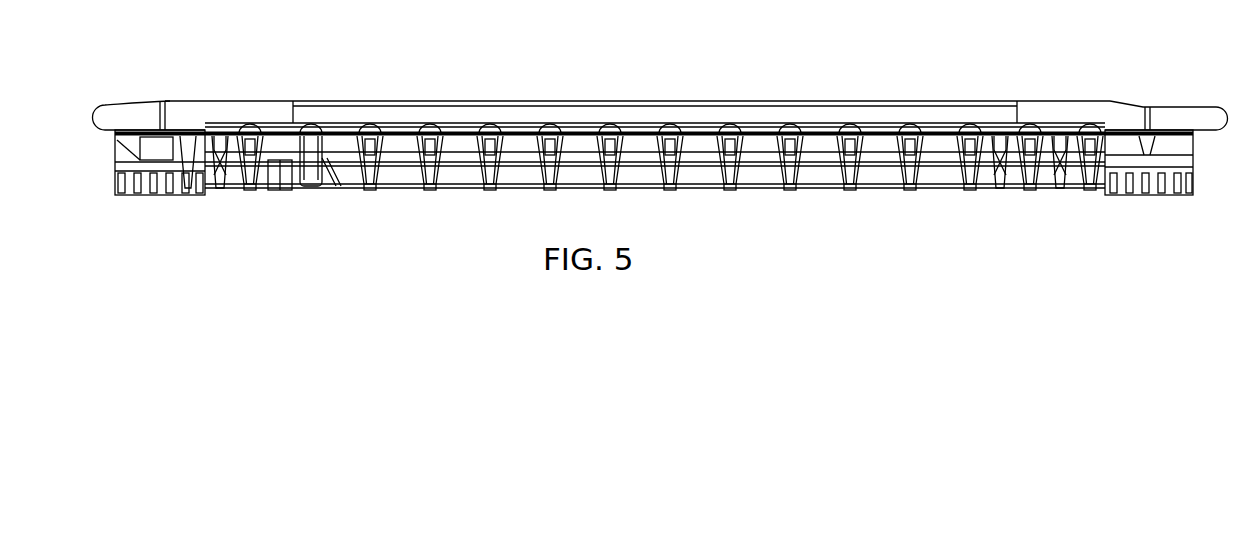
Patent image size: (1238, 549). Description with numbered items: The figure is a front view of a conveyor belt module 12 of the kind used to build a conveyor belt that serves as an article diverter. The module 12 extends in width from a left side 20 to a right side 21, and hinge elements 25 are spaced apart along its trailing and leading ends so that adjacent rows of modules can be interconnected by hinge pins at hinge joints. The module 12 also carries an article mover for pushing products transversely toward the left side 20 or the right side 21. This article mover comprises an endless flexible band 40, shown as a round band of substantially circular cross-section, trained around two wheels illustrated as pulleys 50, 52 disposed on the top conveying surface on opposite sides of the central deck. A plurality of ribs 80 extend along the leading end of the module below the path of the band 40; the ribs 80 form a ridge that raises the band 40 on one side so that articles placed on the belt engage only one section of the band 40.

The conveyor belt module 12 is at (660, 72).
The left side 20 is at (86, 96).
The right side 21 is at (1207, 88).
The hinge elements 25 is at (433, 190).
The endless flexible band 40 is at (536, 103).
The pulley 50 is at (125, 104).
The pulley 52 is at (1155, 107).
The ribs 80 is at (308, 127).